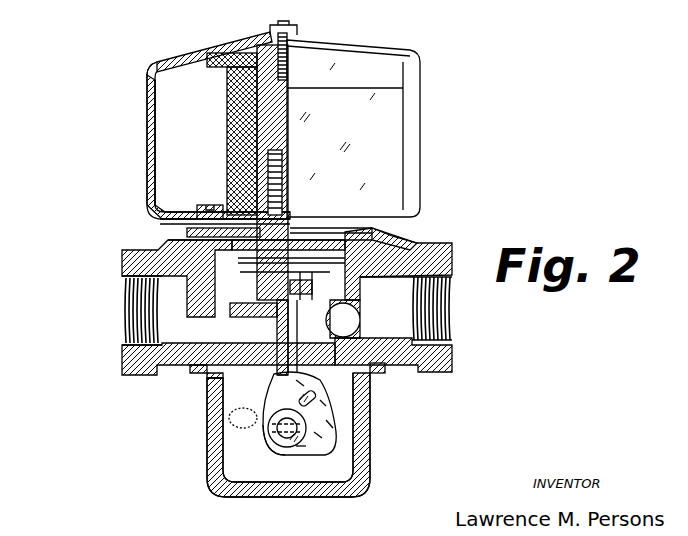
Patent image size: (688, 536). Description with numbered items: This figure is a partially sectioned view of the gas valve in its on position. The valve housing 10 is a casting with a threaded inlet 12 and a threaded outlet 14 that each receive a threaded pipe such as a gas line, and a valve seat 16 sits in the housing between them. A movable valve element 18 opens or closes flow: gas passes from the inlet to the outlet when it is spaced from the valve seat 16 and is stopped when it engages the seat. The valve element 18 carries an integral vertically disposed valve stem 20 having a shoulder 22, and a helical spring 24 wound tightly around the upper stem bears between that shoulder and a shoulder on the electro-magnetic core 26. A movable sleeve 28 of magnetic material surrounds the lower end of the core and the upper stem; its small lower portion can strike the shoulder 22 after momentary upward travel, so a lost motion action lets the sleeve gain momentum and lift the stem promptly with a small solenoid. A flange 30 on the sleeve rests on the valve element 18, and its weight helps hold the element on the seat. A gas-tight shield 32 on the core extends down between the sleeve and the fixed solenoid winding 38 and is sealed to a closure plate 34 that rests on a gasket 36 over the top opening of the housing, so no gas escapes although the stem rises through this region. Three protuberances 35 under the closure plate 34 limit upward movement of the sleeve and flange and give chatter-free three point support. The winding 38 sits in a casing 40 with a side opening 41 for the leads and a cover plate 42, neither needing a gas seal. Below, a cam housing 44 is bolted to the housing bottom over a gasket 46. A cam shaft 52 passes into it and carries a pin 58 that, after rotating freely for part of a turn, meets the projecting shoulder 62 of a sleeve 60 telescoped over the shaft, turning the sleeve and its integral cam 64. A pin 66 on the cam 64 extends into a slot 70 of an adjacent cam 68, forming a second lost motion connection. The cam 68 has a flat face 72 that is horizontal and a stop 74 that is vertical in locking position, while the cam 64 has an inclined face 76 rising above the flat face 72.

The valve housing 10 is at (440, 243).
The threaded inlet 12 is at (432, 312).
The threaded outlet 14 is at (122, 317).
The valve seat 16 is at (190, 365).
The movable valve element 18 is at (325, 258).
The valve stem 20 is at (385, 368).
The shoulder 22 is at (200, 204).
The helical spring 24 is at (193, 130).
The electro-magnetic core 26 is at (210, 68).
The movable sleeve 28 is at (265, 152).
The flange 30 is at (402, 262).
The gas-tight shield 32 is at (160, 150).
The closure plate 34 is at (157, 220).
The protuberances 35 is at (122, 260).
The gasket 36 is at (146, 236).
The solenoid winding 38 is at (225, 107).
The casing 40 is at (383, 137).
The opening 41 is at (150, 108).
The cover plate 42 is at (377, 68).
The cam housing 44 is at (208, 464).
The gasket 46 is at (204, 378).
The cam shaft 52 is at (267, 443).
The pin 58 is at (368, 475).
The sleeve 60 is at (288, 443).
The projecting shoulder 62 is at (330, 425).
The cam 64 is at (318, 435).
The pin 66 is at (323, 403).
The cam 68 is at (313, 447).
The slot 70 is at (318, 398).
The flat face 72 is at (280, 380).
The stop 74 is at (300, 383).
The inclined face 76 is at (243, 418).